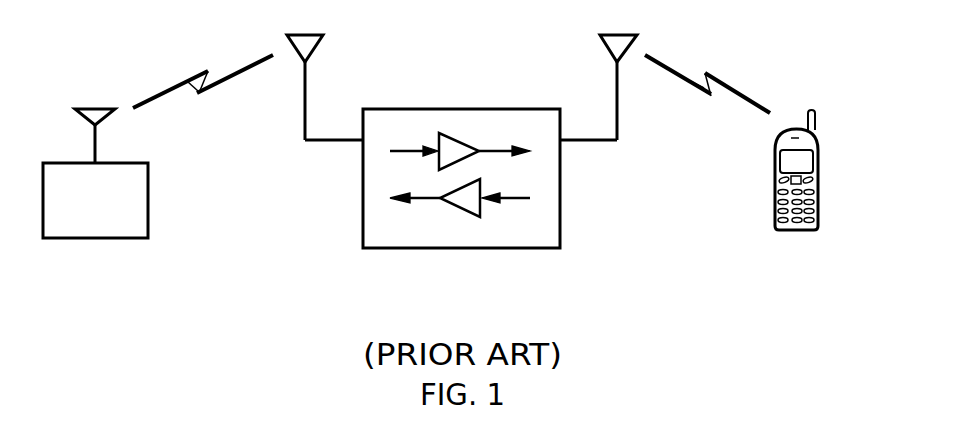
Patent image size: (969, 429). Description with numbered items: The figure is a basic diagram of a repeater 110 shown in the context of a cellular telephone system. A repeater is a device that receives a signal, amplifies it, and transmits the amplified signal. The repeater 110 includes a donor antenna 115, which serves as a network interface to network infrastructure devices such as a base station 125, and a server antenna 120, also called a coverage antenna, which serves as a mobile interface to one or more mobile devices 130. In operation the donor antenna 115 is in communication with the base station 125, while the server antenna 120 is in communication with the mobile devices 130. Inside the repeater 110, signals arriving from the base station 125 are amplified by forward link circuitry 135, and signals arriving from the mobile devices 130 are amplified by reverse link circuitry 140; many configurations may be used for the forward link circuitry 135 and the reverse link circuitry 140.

The repeater 110 is at (525, 248).
The donor antenna 115 is at (313, 48).
The server antenna 120 is at (607, 50).
The base station 125 is at (100, 238).
The mobile device 130 is at (797, 230).
The forward link circuitry 135 is at (462, 144).
The reverse link circuitry 140 is at (465, 213).